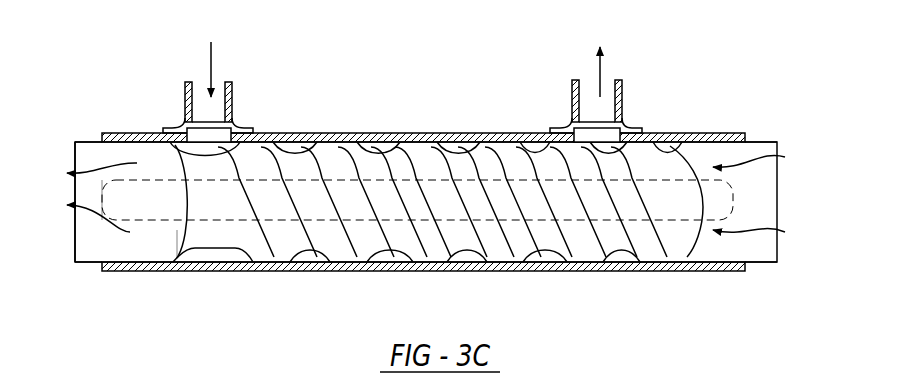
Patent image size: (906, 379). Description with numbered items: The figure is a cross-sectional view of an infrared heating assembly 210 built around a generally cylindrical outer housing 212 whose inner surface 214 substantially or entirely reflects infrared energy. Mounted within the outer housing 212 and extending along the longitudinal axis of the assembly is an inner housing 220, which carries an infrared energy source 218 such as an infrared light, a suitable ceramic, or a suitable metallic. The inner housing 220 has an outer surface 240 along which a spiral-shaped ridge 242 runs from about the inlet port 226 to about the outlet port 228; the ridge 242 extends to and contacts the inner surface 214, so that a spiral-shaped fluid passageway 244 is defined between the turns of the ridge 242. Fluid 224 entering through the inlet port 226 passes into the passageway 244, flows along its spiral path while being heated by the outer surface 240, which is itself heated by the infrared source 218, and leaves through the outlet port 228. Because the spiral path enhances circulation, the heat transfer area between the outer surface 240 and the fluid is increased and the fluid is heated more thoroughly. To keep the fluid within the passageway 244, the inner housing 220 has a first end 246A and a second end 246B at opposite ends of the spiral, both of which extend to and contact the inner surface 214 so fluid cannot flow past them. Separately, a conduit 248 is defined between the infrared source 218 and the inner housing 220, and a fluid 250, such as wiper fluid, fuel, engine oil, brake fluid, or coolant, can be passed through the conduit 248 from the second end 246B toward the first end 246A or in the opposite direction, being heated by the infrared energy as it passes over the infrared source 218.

The infrared heating assembly 210 is at (130, 87).
The outer housing 212 is at (380, 137).
The inner surface 214 is at (298, 147).
The infrared energy source 218 is at (156, 220).
The inner housing 220 is at (217, 233).
The fluid 224 is at (393, 253).
The inlet port 226 is at (218, 88).
The outlet port 228 is at (603, 87).
The outer surface 240 is at (481, 157).
The spiral-shaped ridge 242 is at (580, 240).
The spiral-shaped fluid passageway 244 is at (527, 240).
The first end 246A is at (87, 232).
The second end 246B is at (756, 235).
The conduit 248 is at (83, 150).
The fluid 250 is at (122, 247).